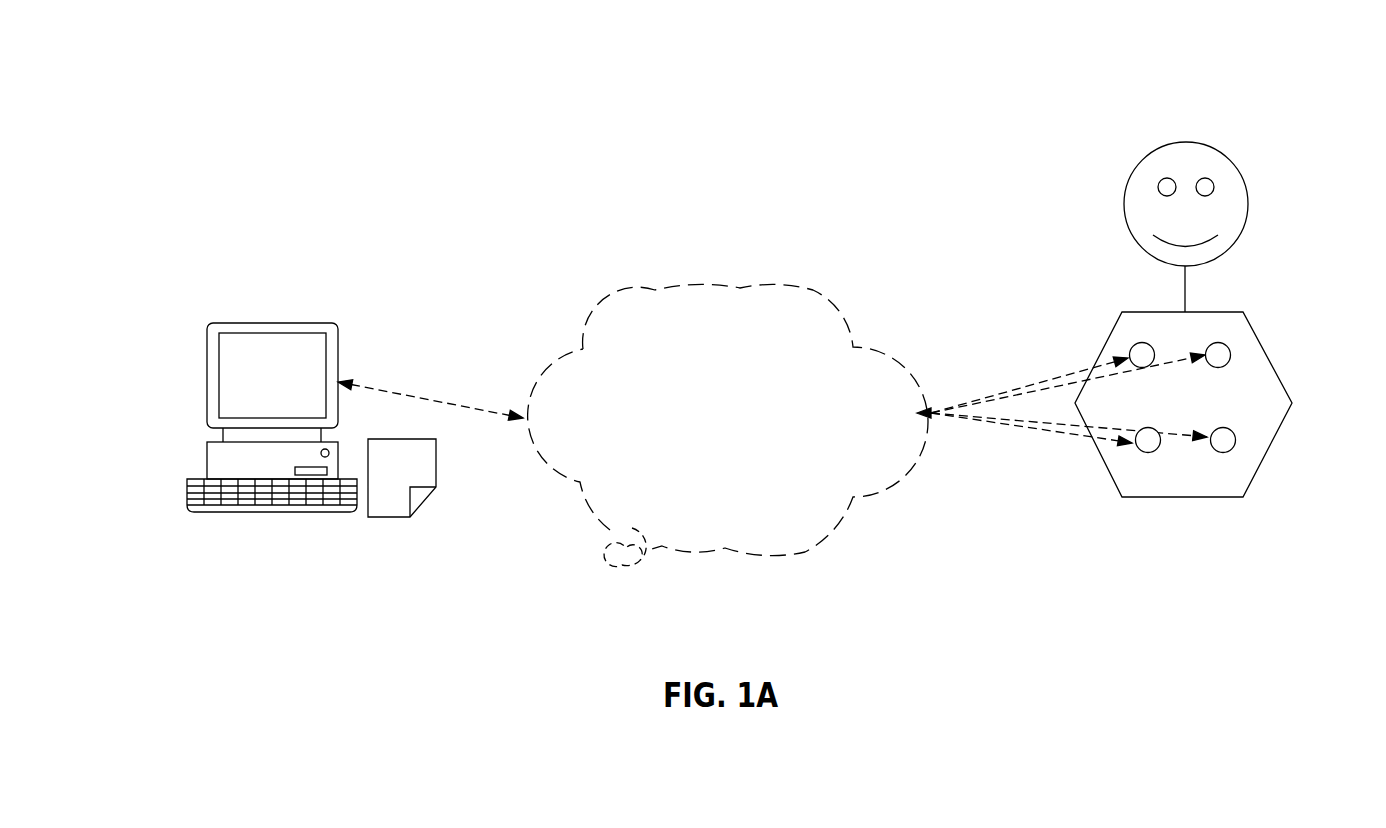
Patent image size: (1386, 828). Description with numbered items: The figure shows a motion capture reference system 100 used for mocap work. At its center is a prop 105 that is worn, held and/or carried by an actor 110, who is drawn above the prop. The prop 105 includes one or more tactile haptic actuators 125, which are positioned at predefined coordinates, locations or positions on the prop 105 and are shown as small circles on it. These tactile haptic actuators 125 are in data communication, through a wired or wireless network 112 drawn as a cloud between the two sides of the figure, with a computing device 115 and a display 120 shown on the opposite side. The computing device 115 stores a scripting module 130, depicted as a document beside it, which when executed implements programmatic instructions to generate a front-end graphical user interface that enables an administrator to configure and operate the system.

The motion capture reference system 100 is at (745, 60).
The prop 105 is at (1265, 347).
The actor 110 is at (1248, 205).
The network 112 is at (655, 290).
The computing device 115 is at (232, 417).
The display 120 is at (232, 361).
The tactile haptic actuators 125 is at (1230, 357).
The scripting module 130 is at (389, 517).